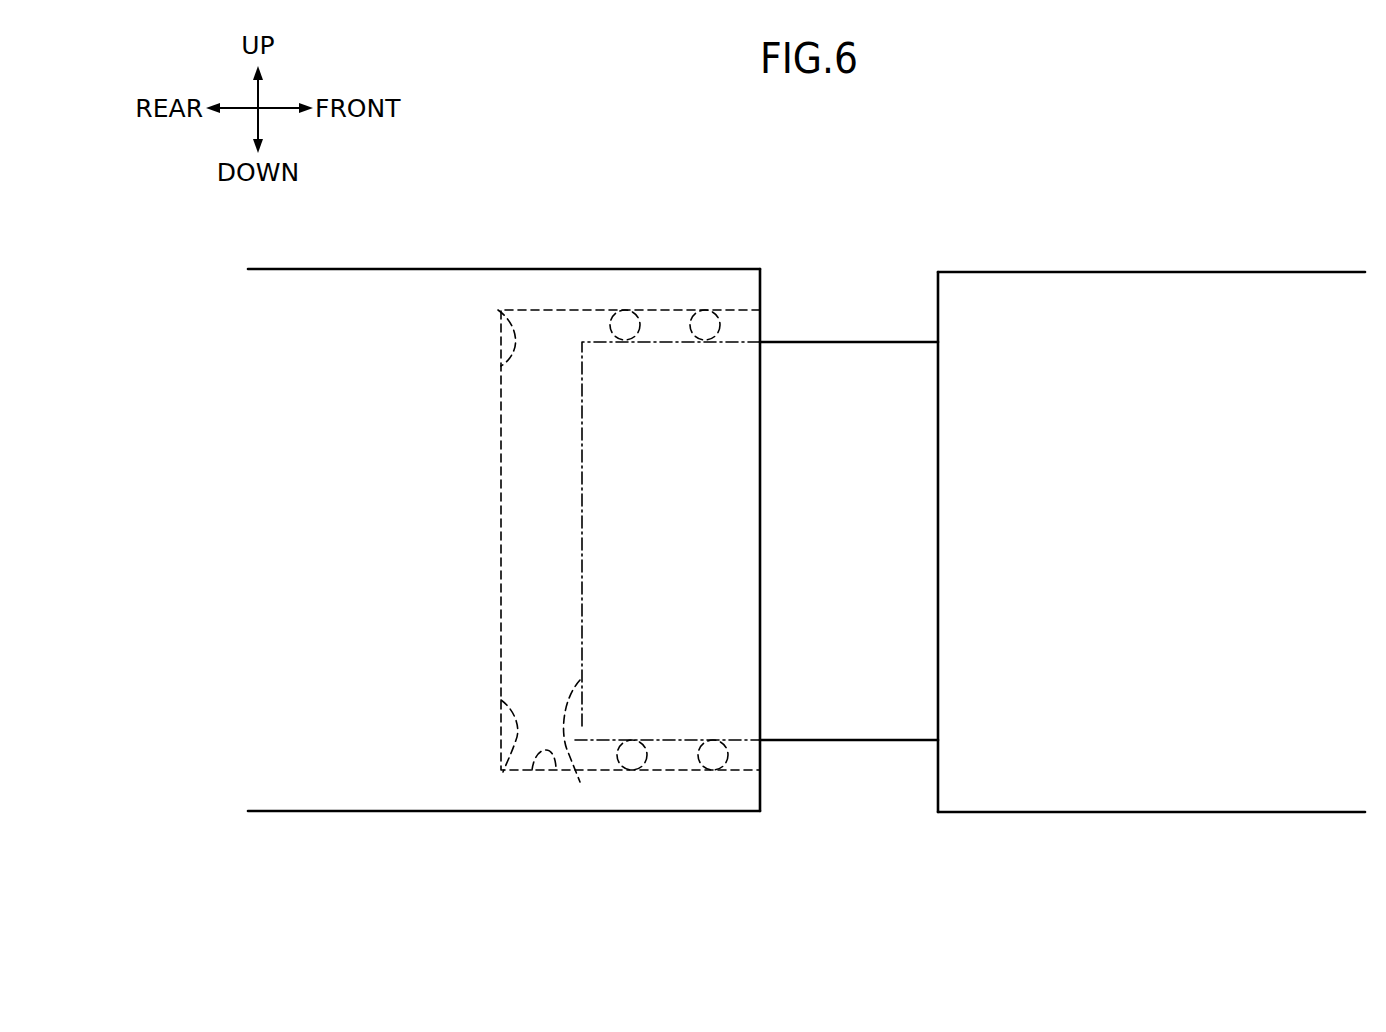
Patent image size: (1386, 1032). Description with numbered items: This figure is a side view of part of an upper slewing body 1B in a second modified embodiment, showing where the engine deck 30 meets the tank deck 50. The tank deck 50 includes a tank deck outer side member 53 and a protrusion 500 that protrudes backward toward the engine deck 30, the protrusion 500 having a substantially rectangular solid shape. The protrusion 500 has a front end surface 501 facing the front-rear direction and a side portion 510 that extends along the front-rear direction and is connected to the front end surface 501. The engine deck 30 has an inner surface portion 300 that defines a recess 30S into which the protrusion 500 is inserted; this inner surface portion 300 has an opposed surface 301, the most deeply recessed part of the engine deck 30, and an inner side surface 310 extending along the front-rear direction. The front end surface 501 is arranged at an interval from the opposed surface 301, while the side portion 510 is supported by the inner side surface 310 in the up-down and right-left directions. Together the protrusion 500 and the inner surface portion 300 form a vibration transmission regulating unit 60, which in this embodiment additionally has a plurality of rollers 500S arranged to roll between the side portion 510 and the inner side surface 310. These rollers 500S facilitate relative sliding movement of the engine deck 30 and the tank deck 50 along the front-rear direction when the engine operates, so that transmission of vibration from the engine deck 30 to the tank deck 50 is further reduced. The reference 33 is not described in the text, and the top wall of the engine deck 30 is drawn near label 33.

The upper slewing body 1B is at (1100, 155).
The engine deck 30 is at (316, 777).
The upper wall of rear frame member 33 is at (348, 297).
The recess 30S is at (533, 355).
The inner surface portion 300 is at (498, 310).
The opposed surface 301 is at (503, 772).
The inner side surface 310 is at (547, 773).
The vibration transmission regulating unit 60 is at (579, 320).
The tank deck 50 is at (1191, 790).
The tank deck outer side member 53 is at (1233, 292).
The protrusion 500 is at (845, 365).
The rollers 500S is at (628, 318).
The front end surface 501 is at (580, 782).
The side portion 510 is at (738, 736).